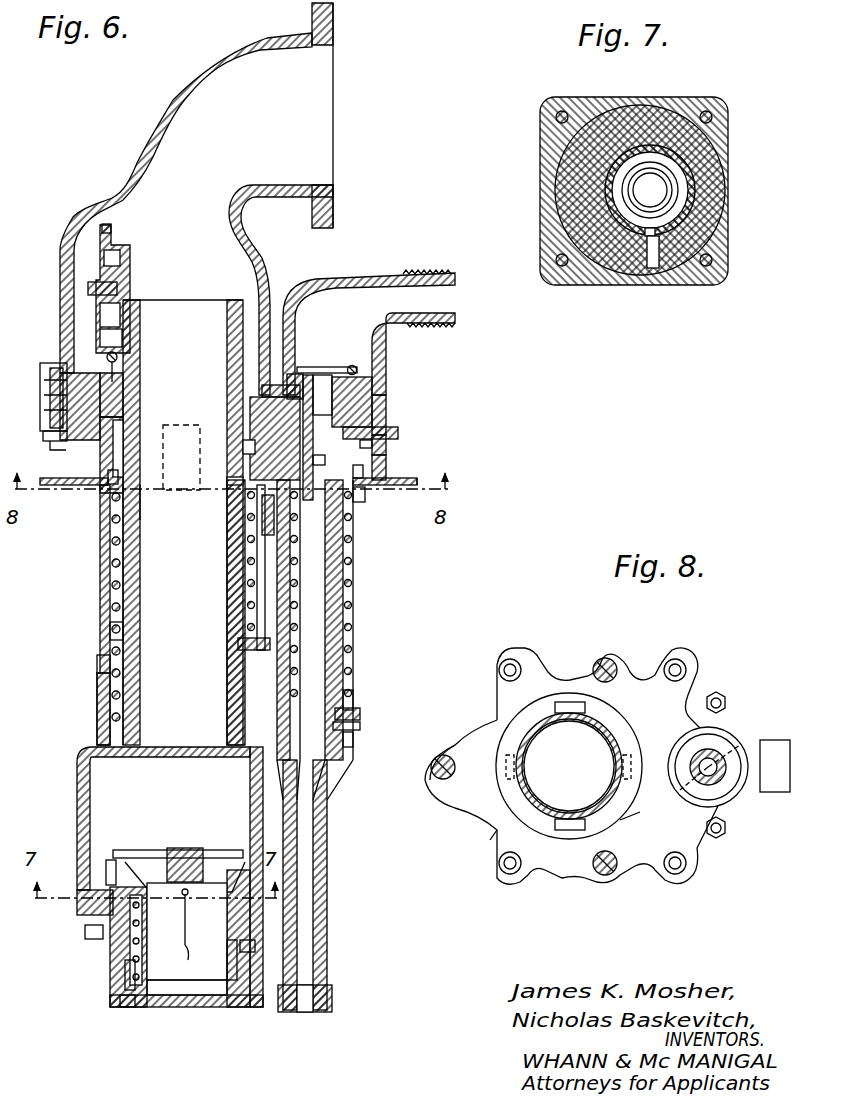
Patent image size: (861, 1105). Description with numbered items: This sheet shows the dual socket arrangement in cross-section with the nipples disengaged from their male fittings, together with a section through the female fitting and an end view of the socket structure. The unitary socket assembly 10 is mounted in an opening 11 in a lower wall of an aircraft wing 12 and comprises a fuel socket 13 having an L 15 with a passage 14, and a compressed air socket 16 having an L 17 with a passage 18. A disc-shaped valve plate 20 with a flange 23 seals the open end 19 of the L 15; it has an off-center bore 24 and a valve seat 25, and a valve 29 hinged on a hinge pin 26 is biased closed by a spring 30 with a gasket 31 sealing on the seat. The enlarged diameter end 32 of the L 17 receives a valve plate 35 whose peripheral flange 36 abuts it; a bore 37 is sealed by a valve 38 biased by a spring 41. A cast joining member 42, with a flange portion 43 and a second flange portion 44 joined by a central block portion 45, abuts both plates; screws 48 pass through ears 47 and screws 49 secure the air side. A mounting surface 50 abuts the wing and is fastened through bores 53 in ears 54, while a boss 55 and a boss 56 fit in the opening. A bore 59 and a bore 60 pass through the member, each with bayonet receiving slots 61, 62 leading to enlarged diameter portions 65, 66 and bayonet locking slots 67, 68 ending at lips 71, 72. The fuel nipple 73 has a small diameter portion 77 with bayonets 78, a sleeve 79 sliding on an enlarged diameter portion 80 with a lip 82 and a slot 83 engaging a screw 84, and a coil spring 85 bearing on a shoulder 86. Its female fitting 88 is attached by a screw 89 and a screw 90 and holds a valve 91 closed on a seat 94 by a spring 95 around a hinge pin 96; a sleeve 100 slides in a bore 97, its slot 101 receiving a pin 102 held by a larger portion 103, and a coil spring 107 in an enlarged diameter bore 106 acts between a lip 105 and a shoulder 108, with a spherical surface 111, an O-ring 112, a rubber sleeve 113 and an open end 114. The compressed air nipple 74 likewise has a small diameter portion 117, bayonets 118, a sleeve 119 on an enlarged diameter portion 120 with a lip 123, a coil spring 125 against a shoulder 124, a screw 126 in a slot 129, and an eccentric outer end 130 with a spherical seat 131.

In FIG. 6, the unitary socket assembly 10 is at (322, 250).
In FIG. 8, the unitary socket assembly 10 is at (634, 660).
In FIG. 6, the opening 11 is at (361, 472).
In FIG. 6, the aircraft wing 12 is at (422, 478).
In FIG. 6, the fuel socket 13 is at (100, 442).
In FIG. 8, the fuel socket 13 is at (537, 712).
In FIG. 6, the passage 14 is at (305, 123).
In FIG. 6, the L 15 is at (158, 104).
In FIG. 6, the compressed air socket 16 is at (400, 440).
In FIG. 8, the compressed air socket 16 is at (736, 756).
In FIG. 6, the L 17 is at (380, 272).
In FIG. 6, the passage 18 is at (447, 303).
In FIG. 6, the open end 19 is at (44, 378).
In FIG. 6, the valve plate 20 is at (96, 376).
In FIG. 6, the flange 23 is at (50, 400).
In FIG. 6, the bore 24 is at (131, 391).
In FIG. 6, the valve seat 25 is at (125, 346).
In FIG. 6, the hinge pin 26 is at (126, 362).
In FIG. 6, the valve 29 is at (126, 266).
In FIG. 6, the spring 30 is at (95, 349).
In FIG. 6, the gasket 31 is at (110, 228).
In FIG. 6, the enlarged diameter end 32 is at (380, 402).
In FIG. 6, the valve plate 35 is at (386, 416).
In FIG. 6, the peripheral flange 36 is at (292, 373).
In FIG. 6, the bore 37 is at (366, 396).
In FIG. 6, the valve 38 is at (312, 369).
In FIG. 6, the spring 41 is at (356, 371).
In FIG. 6, the joining member 42 is at (372, 483).
In FIG. 8, the joining member 42 is at (636, 858).
In FIG. 8, the flange portion 43 is at (462, 805).
In FIG. 6, the flange portion 44 is at (380, 446).
In FIG. 8, the flange portion 44 is at (731, 745).
In FIG. 6, the central block portion 45 is at (257, 411).
In FIG. 6, the ears 47 is at (50, 440).
In FIG. 8, the ears 47 is at (606, 655).
In FIG. 6, the screws 48 is at (62, 450).
In FIG. 8, the screws 48 is at (600, 872).
In FIG. 8, the screws 49 is at (722, 828).
In FIG. 6, the mounting surface 50 is at (266, 506).
In FIG. 8, the mounting surface 50 is at (652, 831).
In FIG. 8, the bores 53 is at (510, 660).
In FIG. 8, the ears 54 is at (500, 836).
In FIG. 6, the boss 55 is at (124, 496).
In FIG. 8, the boss 55 is at (548, 830).
In FIG. 6, the boss 56 is at (361, 488).
In FIG. 6, the bore 59 is at (140, 494).
In FIG. 8, the bore 59 is at (600, 722).
In FIG. 6, the bore 60 is at (290, 532).
In FIG. 8, the bore 60 is at (700, 765).
In FIG. 6, the bayonet receiving slots 61 is at (178, 420).
In FIG. 8, the bayonet receiving slots 61 is at (573, 702).
In FIG. 6, the bayonet receiving slots 62 is at (322, 461).
In FIG. 8, the bayonet receiving slots 62 is at (711, 745).
In FIG. 6, the enlarged diameter portion 65 is at (168, 398).
In FIG. 6, the enlarged diameter portion 66 is at (383, 431).
In FIG. 6, the bayonet locking slots 67 is at (118, 472).
In FIG. 8, the bayonet locking slots 67 is at (497, 790).
In FIG. 6, the bayonet locking slots 68 is at (296, 448).
In FIG. 8, the bayonet locking slots 68 is at (690, 776).
In FIG. 6, the lip 71 is at (124, 500).
In FIG. 6, the lip 72 is at (290, 520).
In FIG. 6, the fuel nipple 73 is at (94, 656).
In FIG. 8, the fuel nipple 73 is at (524, 735).
In FIG. 6, the compressed air nipple 74 is at (378, 676).
In FIG. 8, the compressed air nipple 74 is at (728, 781).
In FIG. 6, the small diameter portion 77 is at (233, 287).
In FIG. 8, the small diameter portion 77 is at (550, 810).
In FIG. 6, the bayonets 78 is at (240, 482).
In FIG. 8, the bayonets 78 is at (502, 780).
In FIG. 6, the sleeve 79 is at (106, 641).
In FIG. 6, the enlarged diameter portion 80 is at (121, 686).
In FIG. 6, the lip 82 is at (240, 504).
In FIG. 6, the slot 83 is at (262, 620).
In FIG. 6, the screw 84 is at (240, 646).
In FIG. 6, the coil spring 85 is at (118, 559).
In FIG. 6, the shoulder 86 is at (114, 631).
In FIG. 6, the female fitting 88 is at (106, 1000).
In FIG. 7, the female fitting 88 is at (608, 266).
In FIG. 6, the screw 89 is at (90, 938).
In FIG. 7, the screw 89 is at (560, 268).
In FIG. 7, the screw 90 is at (712, 262).
In FIG. 6, the valve 91 is at (180, 855).
In FIG. 7, the valve 91 is at (673, 168).
In FIG. 6, the seat 94 is at (245, 858).
In FIG. 6, the spring 95 is at (139, 855).
In FIG. 6, the hinge pin 96 is at (113, 870).
In FIG. 6, the bore 97 is at (183, 896).
In FIG. 7, the bore 97 is at (701, 200).
In FIG. 6, the sleeve 100 is at (136, 973).
In FIG. 7, the sleeve 100 is at (703, 178).
In FIG. 6, the slot 101 is at (186, 942).
In FIG. 7, the slot 101 is at (668, 222).
In FIG. 6, the pin 102 is at (183, 912).
In FIG. 7, the pin 102 is at (680, 265).
In FIG. 7, the larger portion 103 is at (650, 258).
In FIG. 6, the lip 105 is at (136, 972).
In FIG. 6, the enlarged diameter bore 106 is at (246, 926).
In FIG. 6, the coil spring 107 is at (130, 950).
In FIG. 6, the shoulder 108 is at (100, 900).
In FIG. 6, the spherical surface 111 is at (241, 952).
In FIG. 6, the O-ring 112 is at (256, 946).
In FIG. 6, the rubber sleeve 113 is at (130, 1008).
In FIG. 6, the open end 114 is at (190, 1000).
In FIG. 6, the small diameter portion 117 is at (315, 375).
In FIG. 6, the bayonets 118 is at (256, 426).
In FIG. 8, the bayonets 118 is at (762, 760).
In FIG. 6, the sleeve 119 is at (358, 623).
In FIG. 6, the enlarged diameter portion 120 is at (362, 736).
In FIG. 6, the lip 123 is at (356, 506).
In FIG. 6, the shoulder 124 is at (352, 701).
In FIG. 6, the coil spring 125 is at (350, 599).
In FIG. 6, the screw 126 is at (363, 719).
In FIG. 6, the slot 129 is at (361, 746).
In FIG. 6, the outer end 130 is at (313, 990).
In FIG. 6, the spherical seat 131 is at (306, 1012).